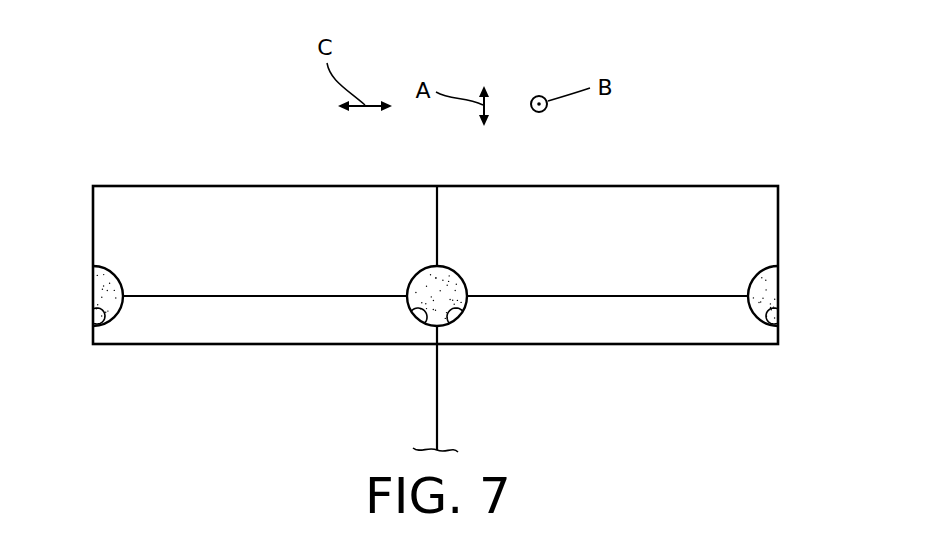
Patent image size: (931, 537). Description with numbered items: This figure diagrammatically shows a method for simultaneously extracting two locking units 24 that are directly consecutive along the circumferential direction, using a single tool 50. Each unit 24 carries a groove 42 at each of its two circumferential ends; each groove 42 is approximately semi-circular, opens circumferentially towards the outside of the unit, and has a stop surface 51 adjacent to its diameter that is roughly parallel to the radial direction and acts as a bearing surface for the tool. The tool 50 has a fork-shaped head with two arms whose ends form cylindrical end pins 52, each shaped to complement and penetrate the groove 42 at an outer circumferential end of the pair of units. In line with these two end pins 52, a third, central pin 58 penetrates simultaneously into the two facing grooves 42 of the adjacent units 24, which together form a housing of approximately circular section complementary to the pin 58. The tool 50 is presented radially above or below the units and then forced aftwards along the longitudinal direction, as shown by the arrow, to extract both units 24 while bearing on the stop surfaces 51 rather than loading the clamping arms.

The locking unit 24 is at (250, 173).
The groove 42 is at (117, 276).
The tool 50 is at (449, 434).
The stop surface 51 is at (93, 313).
The end pin 52 is at (101, 299).
The central pin 58 is at (441, 283).